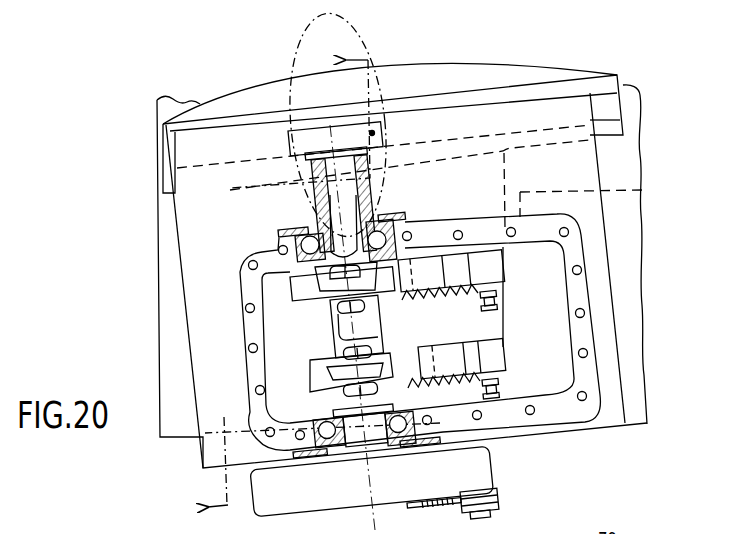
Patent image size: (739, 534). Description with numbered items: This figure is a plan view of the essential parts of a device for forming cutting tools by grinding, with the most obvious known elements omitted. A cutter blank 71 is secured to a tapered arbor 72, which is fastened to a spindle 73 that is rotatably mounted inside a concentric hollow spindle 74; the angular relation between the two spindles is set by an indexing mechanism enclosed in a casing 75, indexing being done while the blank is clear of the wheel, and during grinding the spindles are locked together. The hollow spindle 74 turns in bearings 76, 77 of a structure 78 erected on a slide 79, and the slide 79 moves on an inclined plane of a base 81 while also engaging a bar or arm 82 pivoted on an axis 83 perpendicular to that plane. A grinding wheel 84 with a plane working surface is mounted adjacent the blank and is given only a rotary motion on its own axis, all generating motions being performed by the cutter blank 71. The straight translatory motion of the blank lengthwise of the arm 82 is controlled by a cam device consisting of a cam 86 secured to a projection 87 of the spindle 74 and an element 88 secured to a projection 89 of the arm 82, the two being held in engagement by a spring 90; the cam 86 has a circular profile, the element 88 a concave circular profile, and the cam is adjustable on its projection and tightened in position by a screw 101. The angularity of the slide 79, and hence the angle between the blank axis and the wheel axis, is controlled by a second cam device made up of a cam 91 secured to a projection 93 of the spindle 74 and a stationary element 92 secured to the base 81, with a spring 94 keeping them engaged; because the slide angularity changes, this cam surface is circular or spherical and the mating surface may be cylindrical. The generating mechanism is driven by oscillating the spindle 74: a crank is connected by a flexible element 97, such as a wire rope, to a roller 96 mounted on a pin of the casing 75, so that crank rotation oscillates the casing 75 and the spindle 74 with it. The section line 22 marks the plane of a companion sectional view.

The section line 22- 22 is at (322, 284).
The cutter blank 71 is at (302, 143).
The tapered arbor 72 is at (350, 182).
The spindle 73 is at (372, 205).
The hollow spindle 74 is at (311, 209).
The casing 75 is at (472, 460).
The bearing 76 is at (304, 242).
The bearing 77 is at (327, 430).
The structure 78 is at (248, 326).
The slide 79 is at (200, 282).
The base 81 is at (172, 320).
The arm 82 is at (607, 105).
The axis 83 is at (375, 132).
The grinding wheel 84 is at (305, 42).
The cam 86 is at (307, 295).
The projection 87 is at (327, 282).
The element 88 is at (418, 284).
The projection 89 is at (500, 251).
The spring 90 is at (464, 300).
The cam 91 is at (317, 368).
The stationary element 92 is at (505, 351).
The projection 93 is at (333, 360).
The spring 94 is at (507, 374).
The roller 96 is at (498, 510).
The flexible element 97 is at (421, 511).
The screw 101 is at (338, 309).